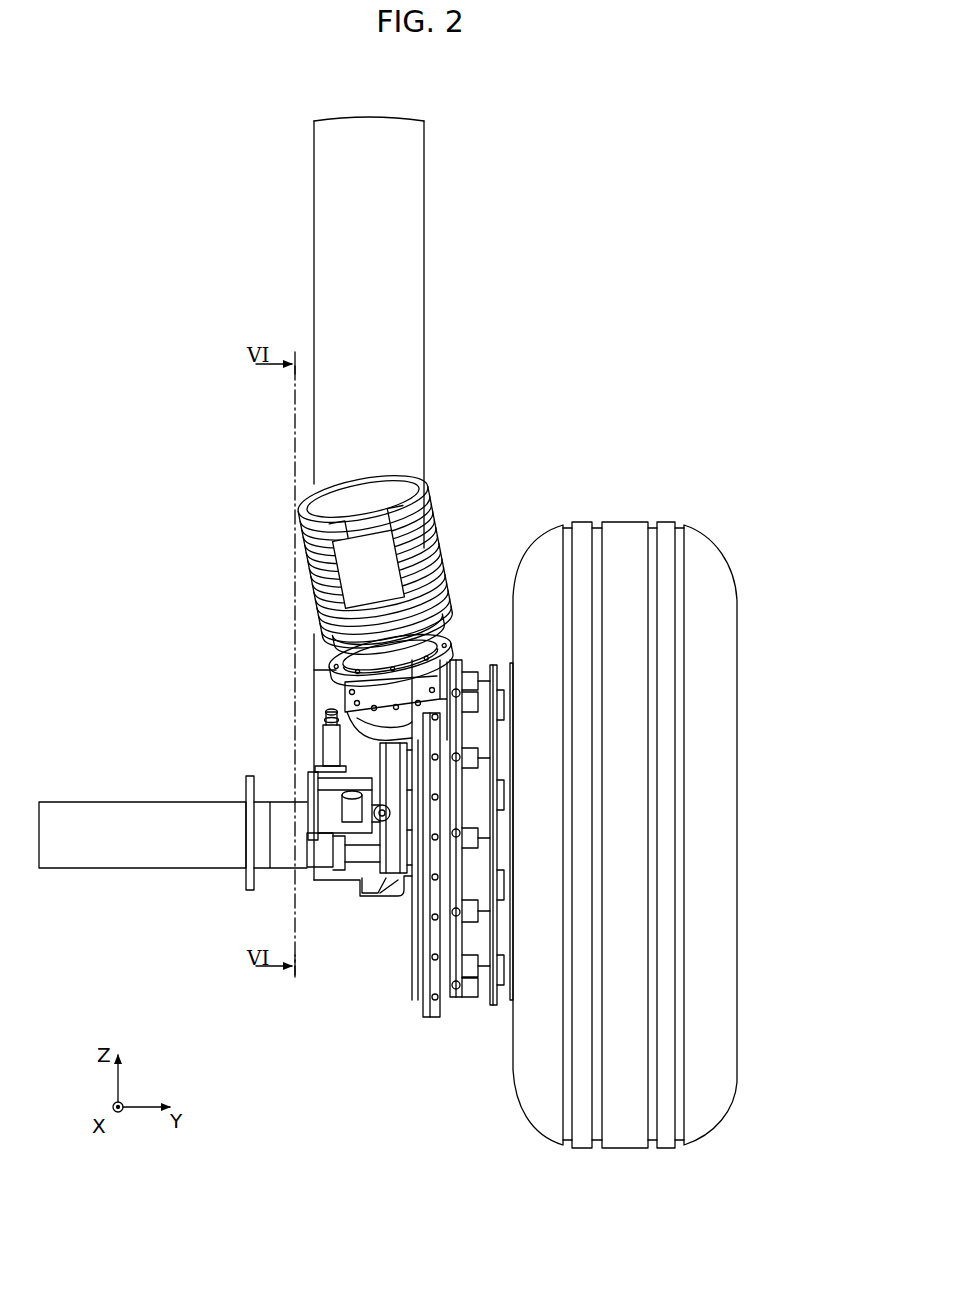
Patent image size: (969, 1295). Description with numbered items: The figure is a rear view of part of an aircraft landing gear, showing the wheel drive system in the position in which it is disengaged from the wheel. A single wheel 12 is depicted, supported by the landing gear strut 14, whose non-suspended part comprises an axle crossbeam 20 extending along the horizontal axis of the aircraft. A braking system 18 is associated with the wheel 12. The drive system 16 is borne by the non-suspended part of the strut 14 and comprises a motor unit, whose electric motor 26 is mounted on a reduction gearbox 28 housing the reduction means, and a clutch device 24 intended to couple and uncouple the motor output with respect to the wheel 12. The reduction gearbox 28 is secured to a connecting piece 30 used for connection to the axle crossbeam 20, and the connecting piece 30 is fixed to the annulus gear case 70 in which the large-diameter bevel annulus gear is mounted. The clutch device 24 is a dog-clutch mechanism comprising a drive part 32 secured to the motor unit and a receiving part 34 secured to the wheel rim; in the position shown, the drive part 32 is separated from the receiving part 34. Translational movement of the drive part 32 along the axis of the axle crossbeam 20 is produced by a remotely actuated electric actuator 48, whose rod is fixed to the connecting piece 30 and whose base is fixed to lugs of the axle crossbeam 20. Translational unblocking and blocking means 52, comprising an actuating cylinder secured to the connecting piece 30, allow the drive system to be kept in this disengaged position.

The wheel 12 is at (737, 572).
The landing gear strut 14 is at (315, 310).
The drive system 16 is at (304, 722).
The braking system 18 is at (476, 873).
The axle crossbeam 20 is at (105, 835).
The clutch device 24 is at (361, 903).
The electric motor 26 is at (433, 537).
The reduction gearbox 28 is at (428, 628).
The connecting piece 30 is at (357, 862).
The drive part 32 is at (457, 1004).
The receiving part 34 is at (495, 1006).
The electric actuator 48 is at (332, 816).
The translational unblocking and blocking means 52 is at (332, 756).
The annulus gear case 70 is at (430, 996).